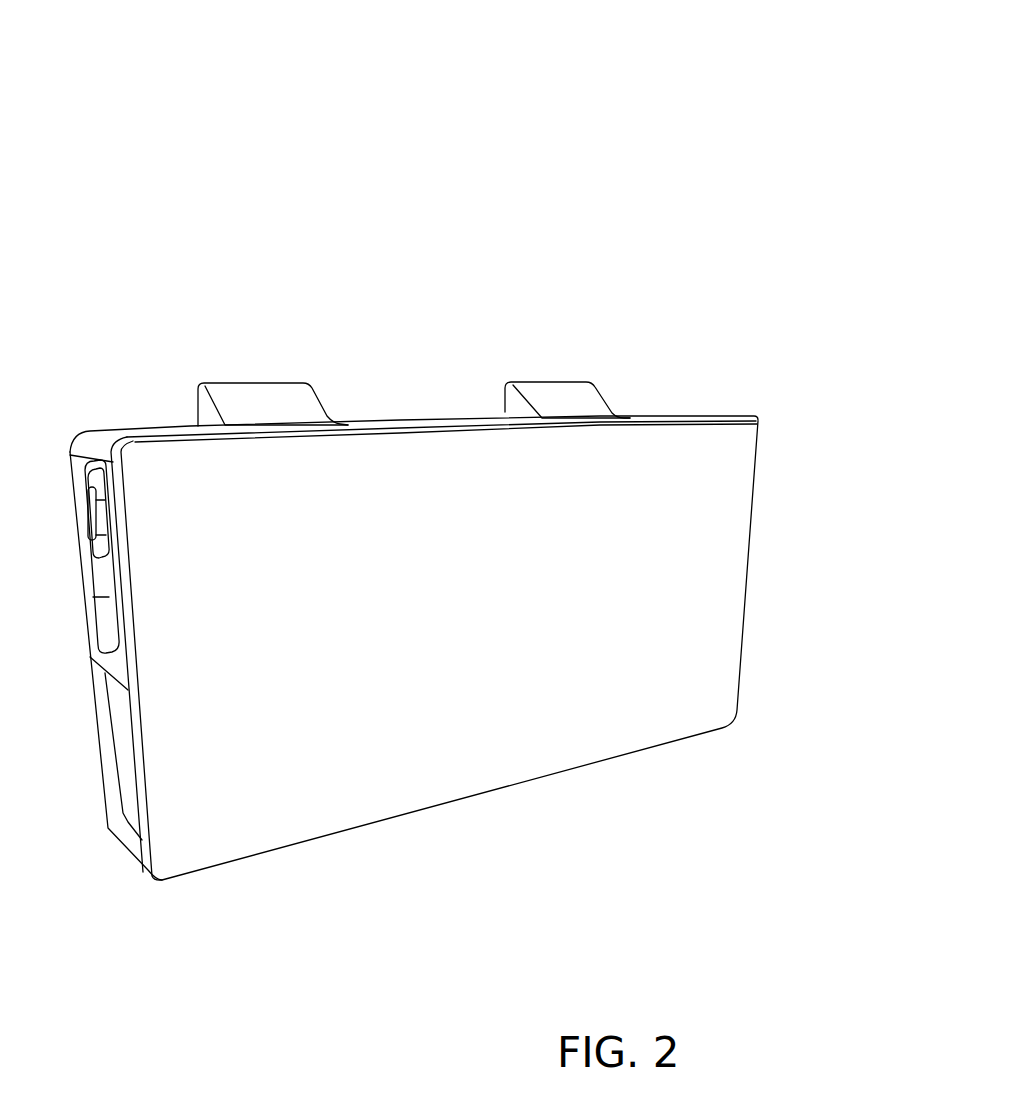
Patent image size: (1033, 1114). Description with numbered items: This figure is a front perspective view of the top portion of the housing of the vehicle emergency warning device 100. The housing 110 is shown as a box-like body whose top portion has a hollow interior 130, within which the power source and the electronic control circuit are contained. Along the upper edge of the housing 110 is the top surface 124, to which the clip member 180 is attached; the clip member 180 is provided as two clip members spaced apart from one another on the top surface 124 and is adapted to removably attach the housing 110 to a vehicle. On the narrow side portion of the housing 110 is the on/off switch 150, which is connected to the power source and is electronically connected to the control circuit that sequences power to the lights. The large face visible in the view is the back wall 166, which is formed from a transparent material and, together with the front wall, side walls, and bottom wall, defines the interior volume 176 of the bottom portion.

The vehicle emergency warning device 100 is at (679, 102).
The housing 110 is at (762, 447).
The top surface 124 is at (645, 414).
The hollow interior 130 is at (448, 472).
The on/off switch 150 is at (89, 532).
The back wall 166 is at (536, 748).
The interior volume 176 is at (370, 478).
The clip member 180 is at (268, 380).